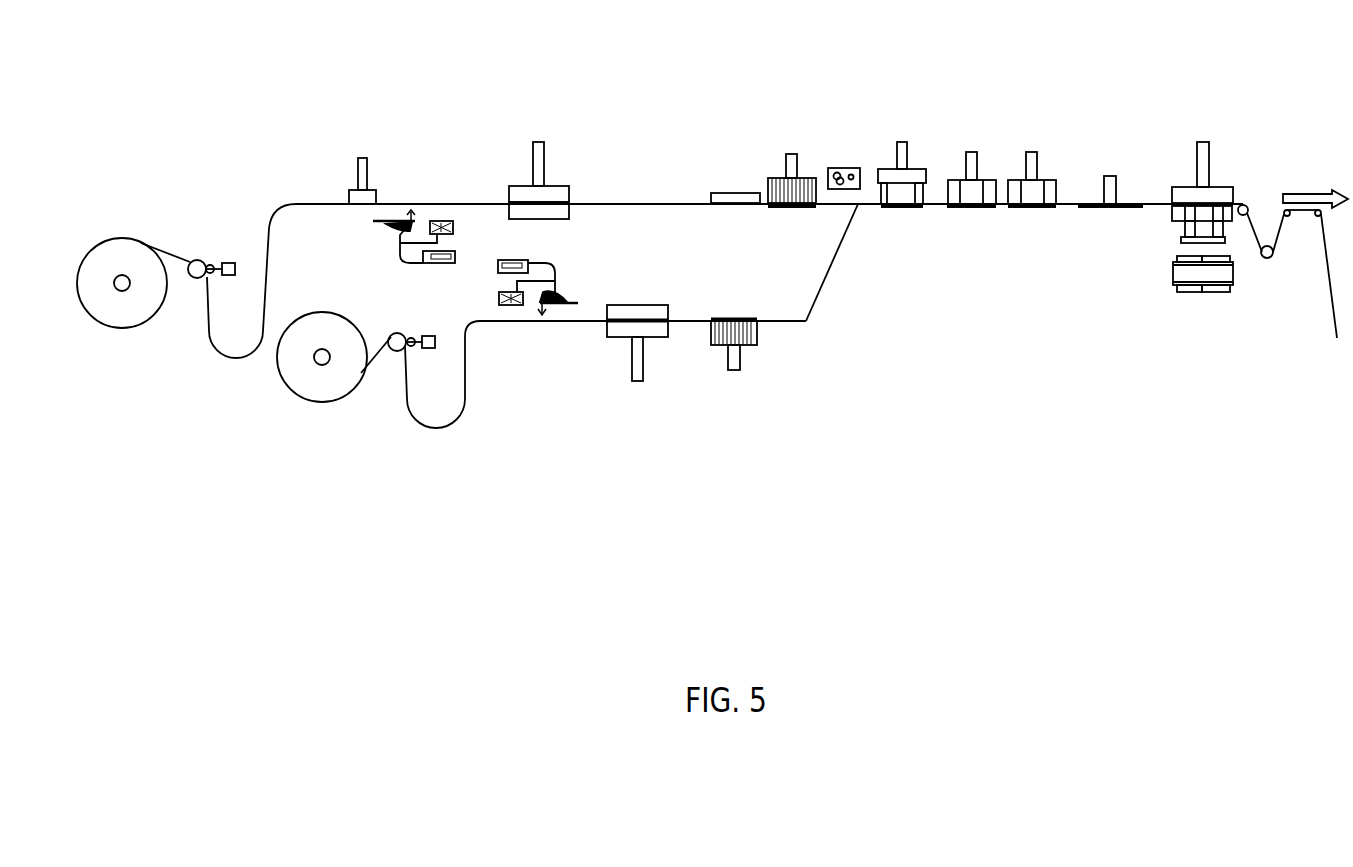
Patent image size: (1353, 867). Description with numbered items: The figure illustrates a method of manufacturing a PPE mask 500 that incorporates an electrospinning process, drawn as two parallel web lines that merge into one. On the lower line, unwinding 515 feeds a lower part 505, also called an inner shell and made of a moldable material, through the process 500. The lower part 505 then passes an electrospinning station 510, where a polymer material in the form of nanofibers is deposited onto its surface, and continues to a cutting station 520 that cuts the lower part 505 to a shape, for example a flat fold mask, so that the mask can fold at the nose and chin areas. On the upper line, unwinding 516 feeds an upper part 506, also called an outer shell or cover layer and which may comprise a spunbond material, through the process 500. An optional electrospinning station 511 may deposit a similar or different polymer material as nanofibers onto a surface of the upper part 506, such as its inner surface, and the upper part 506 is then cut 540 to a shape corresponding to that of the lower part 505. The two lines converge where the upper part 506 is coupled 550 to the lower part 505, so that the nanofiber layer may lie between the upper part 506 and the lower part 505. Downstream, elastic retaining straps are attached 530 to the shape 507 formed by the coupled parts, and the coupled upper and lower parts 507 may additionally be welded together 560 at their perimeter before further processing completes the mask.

The method of manufacturing a PPE mask 500 is at (240, 93).
The lower part 505 is at (438, 431).
The upper part 506 is at (277, 210).
The shape formed by the coupled upper and lower parts 507 is at (936, 206).
The electrospinning 510 is at (540, 333).
The electrospinning 511 is at (417, 195).
The unwinding 515 is at (375, 387).
The unwinding 516 is at (192, 248).
The cutting 520 is at (649, 376).
The attaching elastic retaining straps 530 is at (885, 143).
The cutting 540 is at (518, 139).
The coupling 550 is at (858, 207).
The welding 560 is at (978, 145).